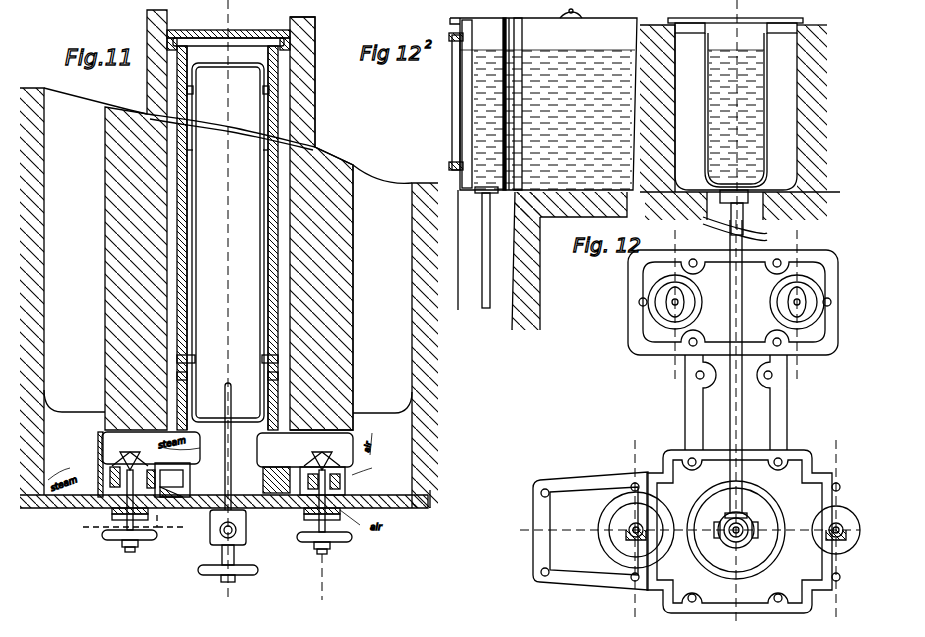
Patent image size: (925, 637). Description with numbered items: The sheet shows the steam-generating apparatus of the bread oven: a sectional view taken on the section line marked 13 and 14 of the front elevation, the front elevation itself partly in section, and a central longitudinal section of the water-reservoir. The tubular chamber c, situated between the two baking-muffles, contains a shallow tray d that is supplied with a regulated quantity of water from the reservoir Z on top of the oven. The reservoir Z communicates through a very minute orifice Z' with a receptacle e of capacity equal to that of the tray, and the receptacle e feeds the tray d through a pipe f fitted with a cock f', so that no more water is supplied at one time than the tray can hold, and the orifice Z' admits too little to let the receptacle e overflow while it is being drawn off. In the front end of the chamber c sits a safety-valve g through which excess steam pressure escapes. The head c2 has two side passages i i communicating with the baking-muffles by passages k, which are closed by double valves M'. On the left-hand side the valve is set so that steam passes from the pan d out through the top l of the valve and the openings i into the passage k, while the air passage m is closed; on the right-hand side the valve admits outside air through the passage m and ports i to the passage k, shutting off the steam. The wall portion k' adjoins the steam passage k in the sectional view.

In FIG. 11, the tubular chamber c is at (228, 255).
In FIG. 11, the shallow tray d is at (228, 242).
In FIG. 11, the pipe f is at (234, 446).
In FIG. 12a, the pipe f is at (479, 248).
In FIG. 12, the pipe f is at (738, 422).
In FIG. 11, the passages k is at (228, 250).
In FIG. 12, the passages k is at (850, 309).
In FIG. 11, the chamber wall k' is at (321, 223).
In FIG. 11, the top of the valve l is at (225, 464).
In FIG. 11, the passage m is at (112, 510).
In FIG. 12, the passage m is at (736, 539).
In FIG. 11, the double valves M' is at (227, 535).
In FIG. 11, the head c2 is at (268, 508).
In FIG. 12, the head c2 is at (735, 531).
In FIG. 11, the cock f' is at (228, 546).
In FIG. 12, the cock f' is at (737, 529).
In FIG. 12a, the receptacle e is at (626, 104).
In FIG. 12a, the reservoir Z is at (543, 99).
In FIG. 12a, the orifice Z' is at (520, 104).
In FIG. 12, the plate q is at (857, 302).
In FIG. 12, the safety-valve g is at (736, 305).
In FIG. 12, the side passages i is at (711, 530).
In FIG. 12, the cover plate 13 is at (568, 531).
In FIG. 12, the boss 14 is at (836, 530).